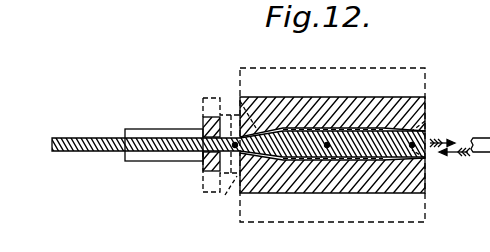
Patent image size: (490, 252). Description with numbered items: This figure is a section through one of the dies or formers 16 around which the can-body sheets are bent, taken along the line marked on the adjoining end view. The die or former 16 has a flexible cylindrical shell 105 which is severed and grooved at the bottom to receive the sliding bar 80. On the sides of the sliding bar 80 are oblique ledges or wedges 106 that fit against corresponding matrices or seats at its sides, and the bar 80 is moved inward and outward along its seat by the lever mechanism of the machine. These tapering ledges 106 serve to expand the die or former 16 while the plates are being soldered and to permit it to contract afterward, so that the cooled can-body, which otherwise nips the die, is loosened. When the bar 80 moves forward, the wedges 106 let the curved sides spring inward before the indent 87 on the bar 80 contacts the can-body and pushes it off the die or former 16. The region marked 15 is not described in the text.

The sliding bar 80 is at (237, 135).
The indent 87 is at (204, 160).
The guide section 15 is at (224, 118).
The die or former 16 is at (332, 133).
The flexible cylindrical shell 105 is at (320, 147).
The oblique ledges or wedges 106 is at (240, 101).